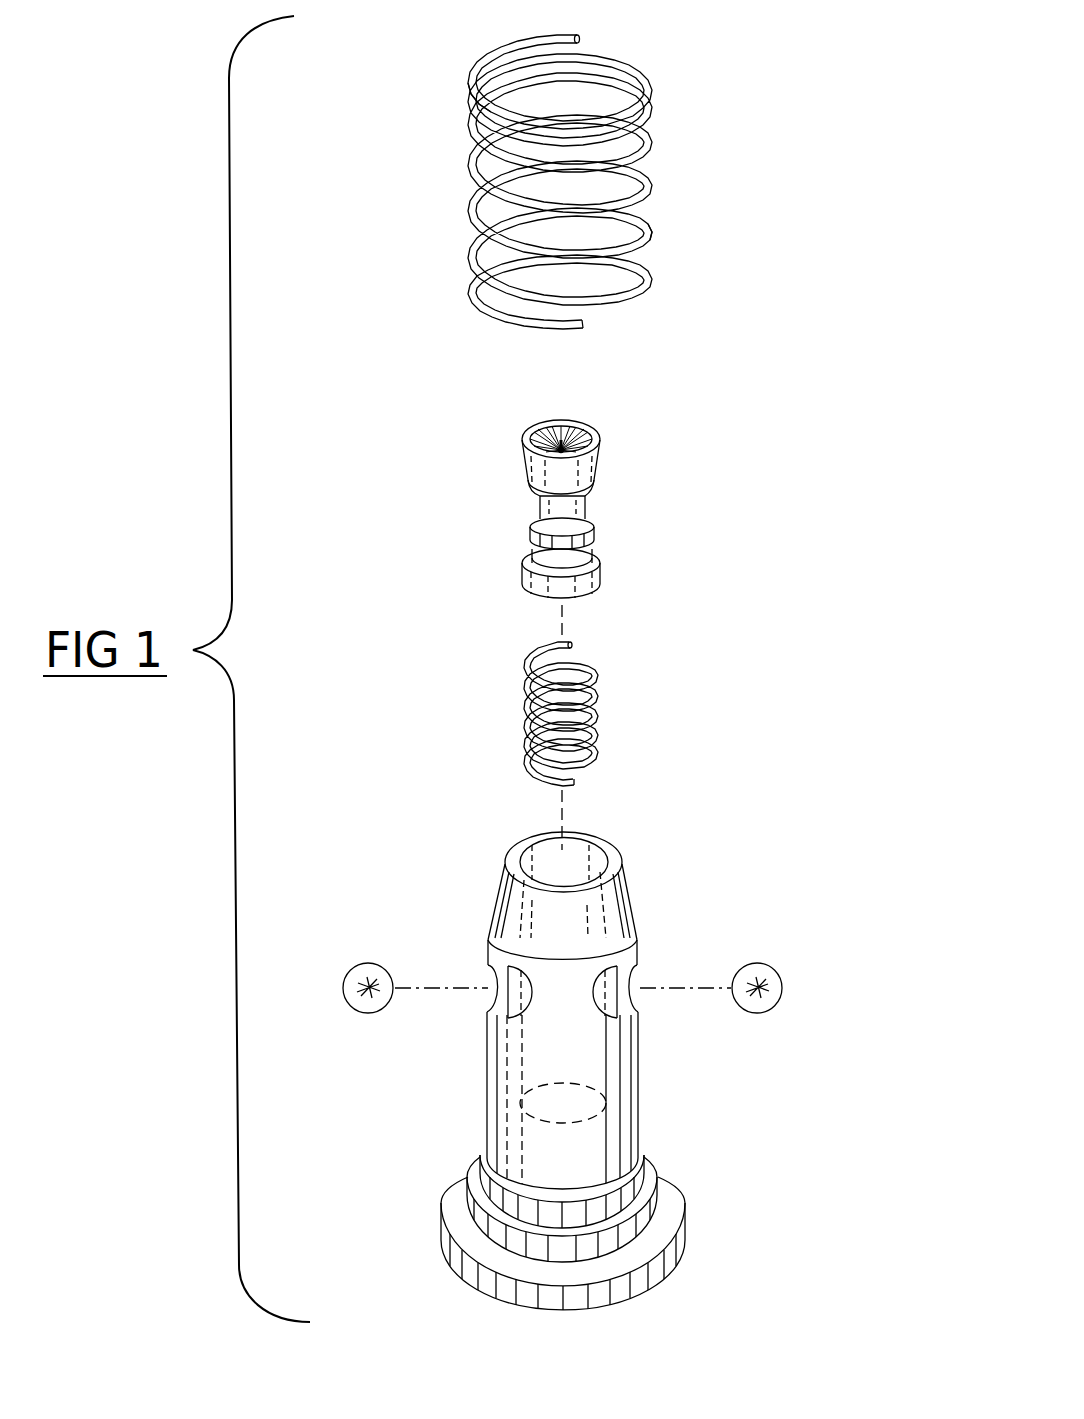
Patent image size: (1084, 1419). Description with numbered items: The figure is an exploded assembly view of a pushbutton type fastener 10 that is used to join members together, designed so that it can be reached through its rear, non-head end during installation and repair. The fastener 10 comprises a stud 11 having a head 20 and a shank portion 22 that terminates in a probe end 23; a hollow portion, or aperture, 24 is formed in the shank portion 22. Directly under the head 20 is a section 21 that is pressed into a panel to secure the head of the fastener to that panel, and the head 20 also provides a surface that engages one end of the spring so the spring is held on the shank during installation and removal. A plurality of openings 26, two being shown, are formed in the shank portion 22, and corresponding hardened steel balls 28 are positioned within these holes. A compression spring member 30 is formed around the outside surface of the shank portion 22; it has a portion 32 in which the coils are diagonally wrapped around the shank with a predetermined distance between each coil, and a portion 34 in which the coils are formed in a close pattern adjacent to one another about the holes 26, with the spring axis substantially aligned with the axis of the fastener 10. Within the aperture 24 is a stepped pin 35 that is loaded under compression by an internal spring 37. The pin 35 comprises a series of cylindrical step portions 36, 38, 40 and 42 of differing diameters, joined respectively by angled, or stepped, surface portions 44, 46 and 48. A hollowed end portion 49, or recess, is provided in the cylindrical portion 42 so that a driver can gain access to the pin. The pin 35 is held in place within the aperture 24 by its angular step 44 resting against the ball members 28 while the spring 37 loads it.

The pushbutton type fastener 10 is at (712, 107).
The stud 11 is at (462, 1105).
The head 20 is at (640, 1300).
The section under head 21 is at (640, 1205).
The shank portion 22 is at (641, 1062).
The probe end 23 is at (630, 900).
The hollow portion or aperture 24 is at (578, 853).
The openings 26 is at (495, 975).
The hardened steel balls 28 is at (350, 1008).
The compression spring member 30 is at (660, 169).
The diagonally wrapped spring portion 32 is at (652, 230).
The close-pattern spring portion 34 is at (472, 104).
The stepped pin 35 is at (612, 502).
The cylindrical step portion 36 is at (603, 578).
The internal spring 37 is at (600, 697).
The cylindrical step portion 38 is at (590, 536).
The cylindrical step portion 40 is at (536, 512).
The cylindrical step portion 42 is at (601, 463).
The angular step surface portion 44 is at (603, 553).
The angled surface portion 46 is at (533, 534).
The angled surface portion 48 is at (532, 497).
The hollowed end portion or recess 49 is at (566, 440).